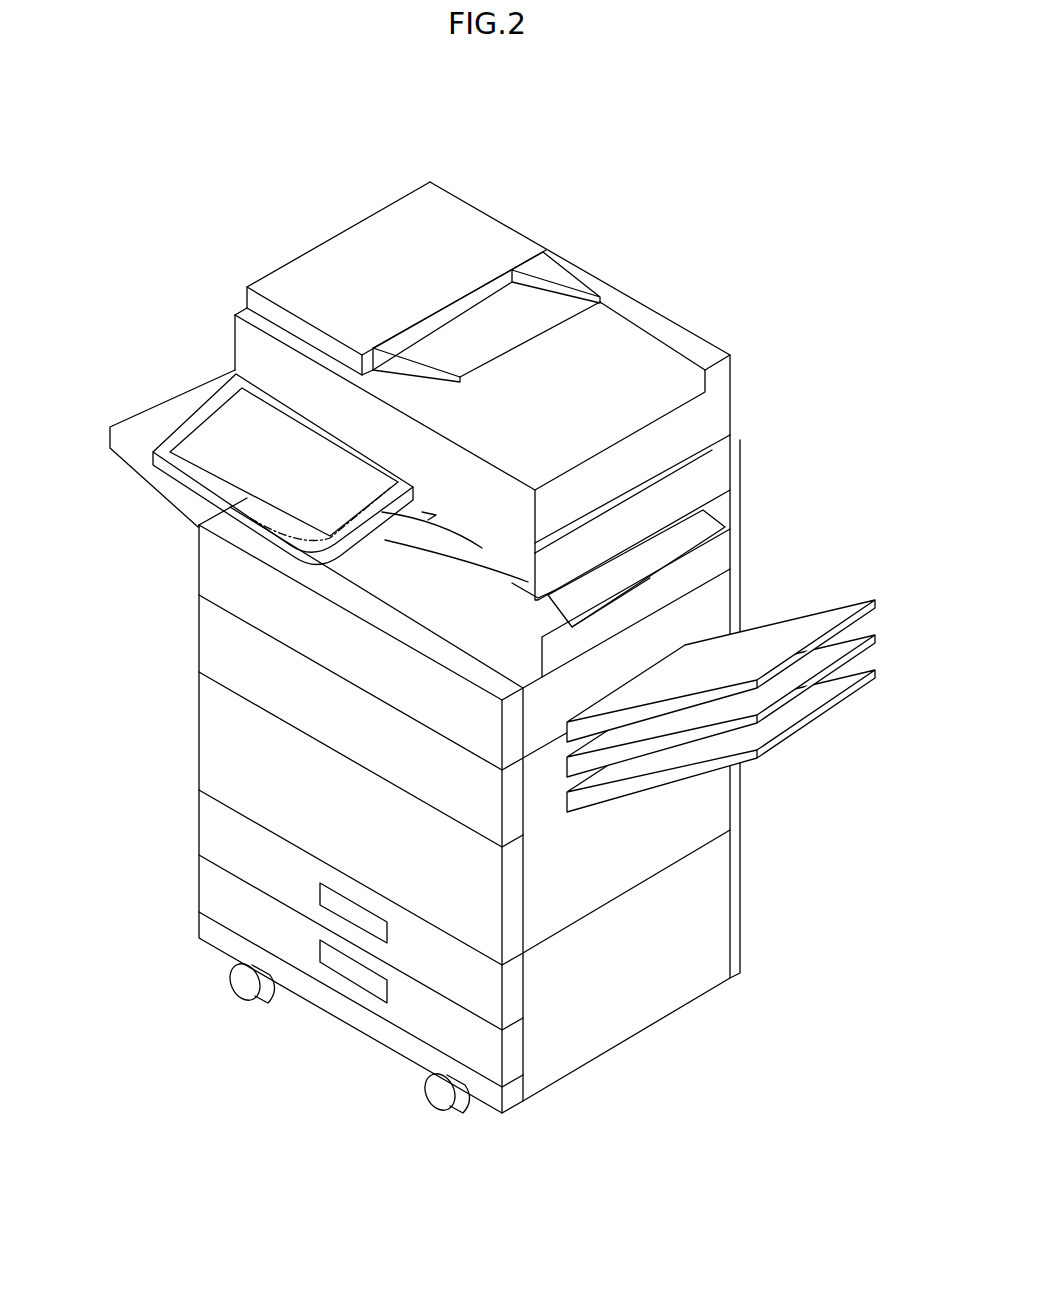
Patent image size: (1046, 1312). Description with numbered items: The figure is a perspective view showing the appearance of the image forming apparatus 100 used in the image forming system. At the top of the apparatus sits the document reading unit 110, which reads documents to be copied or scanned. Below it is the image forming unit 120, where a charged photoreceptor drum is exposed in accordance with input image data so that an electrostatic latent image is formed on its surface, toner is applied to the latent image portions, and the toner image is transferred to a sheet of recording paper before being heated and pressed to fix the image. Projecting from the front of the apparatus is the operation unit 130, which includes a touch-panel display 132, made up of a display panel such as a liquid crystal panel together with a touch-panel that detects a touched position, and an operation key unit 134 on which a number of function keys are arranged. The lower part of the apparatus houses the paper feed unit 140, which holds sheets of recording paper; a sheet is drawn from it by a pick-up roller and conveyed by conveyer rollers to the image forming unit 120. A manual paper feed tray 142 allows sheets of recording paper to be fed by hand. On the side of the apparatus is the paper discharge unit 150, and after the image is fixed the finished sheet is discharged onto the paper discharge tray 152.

The image forming apparatus 100 is at (650, 224).
The document reading unit 110 is at (757, 390).
The image forming unit 120 is at (180, 702).
The operation unit 130 is at (198, 510).
The touch-panel display 132 is at (210, 450).
The operation key unit 134 is at (310, 507).
The paper feed unit 140 is at (180, 858).
The manual paper feed tray 142 is at (128, 412).
The paper discharge unit 150 is at (820, 583).
The paper discharge tray 152 is at (883, 597).